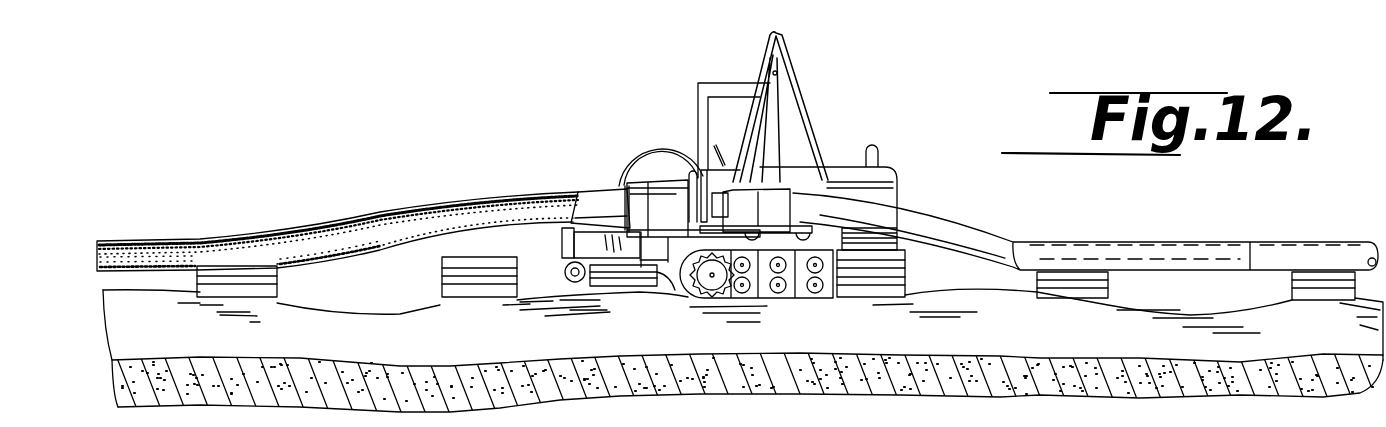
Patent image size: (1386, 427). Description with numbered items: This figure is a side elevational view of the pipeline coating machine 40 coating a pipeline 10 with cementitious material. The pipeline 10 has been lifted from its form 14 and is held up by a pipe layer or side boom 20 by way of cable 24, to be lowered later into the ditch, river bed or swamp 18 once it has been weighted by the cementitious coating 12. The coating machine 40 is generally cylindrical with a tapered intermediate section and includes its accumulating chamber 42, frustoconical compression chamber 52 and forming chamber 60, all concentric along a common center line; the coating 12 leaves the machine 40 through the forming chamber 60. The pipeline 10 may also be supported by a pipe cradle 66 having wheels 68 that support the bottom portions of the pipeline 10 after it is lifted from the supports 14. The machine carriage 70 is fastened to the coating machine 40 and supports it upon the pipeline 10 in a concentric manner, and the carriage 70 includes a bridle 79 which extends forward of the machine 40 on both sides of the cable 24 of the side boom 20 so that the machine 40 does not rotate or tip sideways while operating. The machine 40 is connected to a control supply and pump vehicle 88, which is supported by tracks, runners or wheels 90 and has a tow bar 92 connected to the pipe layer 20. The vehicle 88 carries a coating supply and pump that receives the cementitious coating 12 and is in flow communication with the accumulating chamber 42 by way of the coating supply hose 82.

The pipeline 10 is at (1013, 250).
The cementitious coating 12 is at (332, 227).
The form 14 is at (260, 272).
The ditch, river bed or swamp 18 is at (1022, 323).
The pipe layer or side boom 20 is at (708, 83).
The cable 24 is at (775, 182).
The pipeline coating machine 40 is at (600, 190).
The accumulating chamber 42 is at (660, 183).
The frustoconical compression chamber 52 is at (628, 190).
The forming chamber 60 is at (582, 193).
The pipe cradle 66 is at (795, 228).
The wheels 68 is at (832, 250).
The machine carriage 70 is at (735, 225).
The bridle 79 is at (760, 180).
The coating supply hose 82 is at (665, 148).
The control supply and pump vehicle 88 is at (565, 250).
The tracks, runners or wheels 90 is at (565, 275).
The tow bar 92 is at (660, 238).